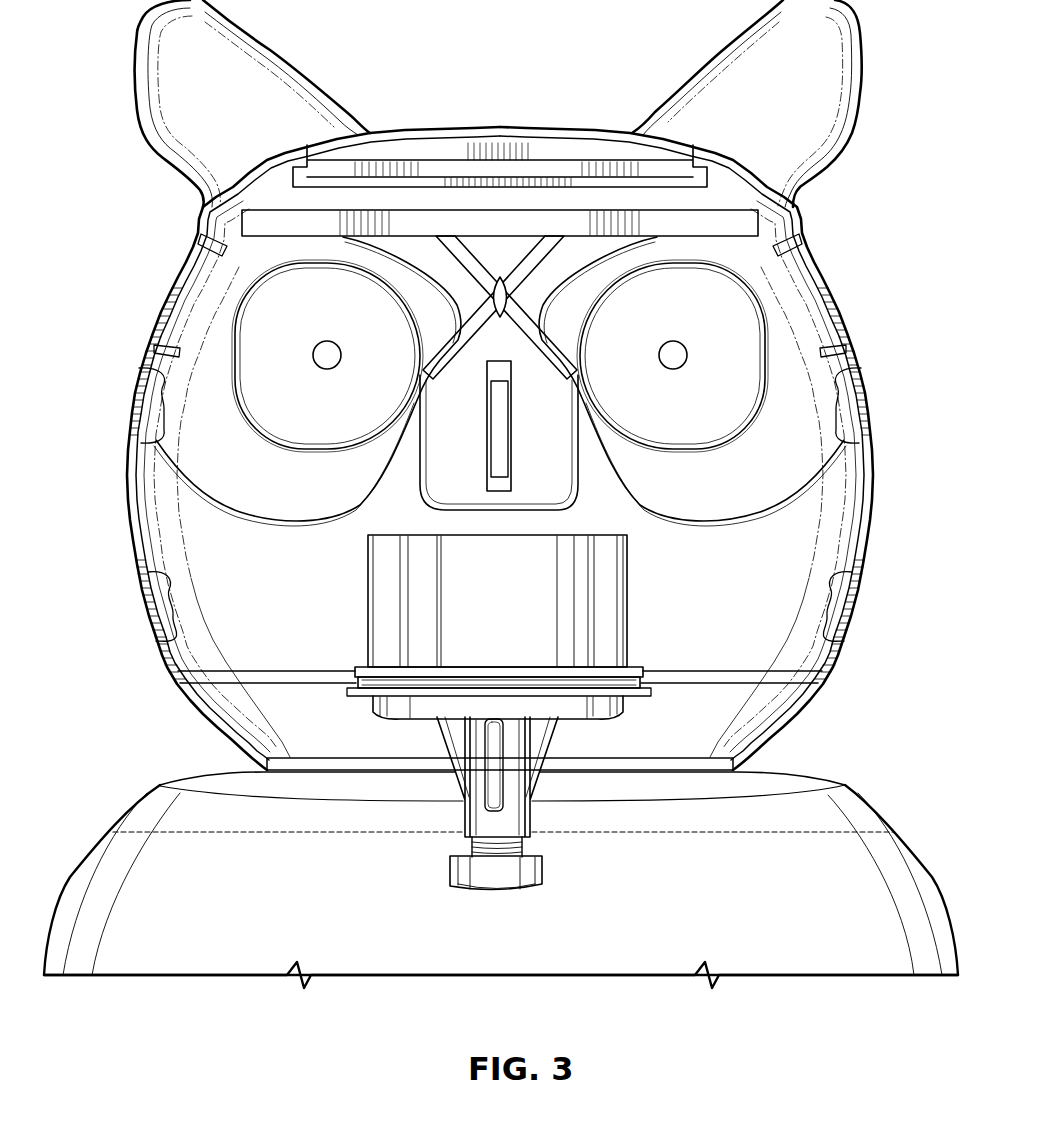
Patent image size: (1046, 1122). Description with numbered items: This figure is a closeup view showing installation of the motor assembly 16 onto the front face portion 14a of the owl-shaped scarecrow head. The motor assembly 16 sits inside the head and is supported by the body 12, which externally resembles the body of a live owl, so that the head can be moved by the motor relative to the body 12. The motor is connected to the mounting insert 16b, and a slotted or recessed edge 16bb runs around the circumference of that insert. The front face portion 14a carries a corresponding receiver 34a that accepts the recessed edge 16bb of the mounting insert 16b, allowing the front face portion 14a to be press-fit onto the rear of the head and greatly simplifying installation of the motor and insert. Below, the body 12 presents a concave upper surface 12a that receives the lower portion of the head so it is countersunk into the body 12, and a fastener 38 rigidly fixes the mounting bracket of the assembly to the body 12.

The front face portion 14a is at (166, 301).
The motor assembly 16 is at (488, 695).
The receiver 34a is at (356, 675).
The mounting insert 16b is at (642, 668).
The recessed edge 16bb is at (370, 688).
The concave upper surface 12a is at (769, 787).
The fastener 38 is at (452, 878).
The body 12 is at (501, 851).